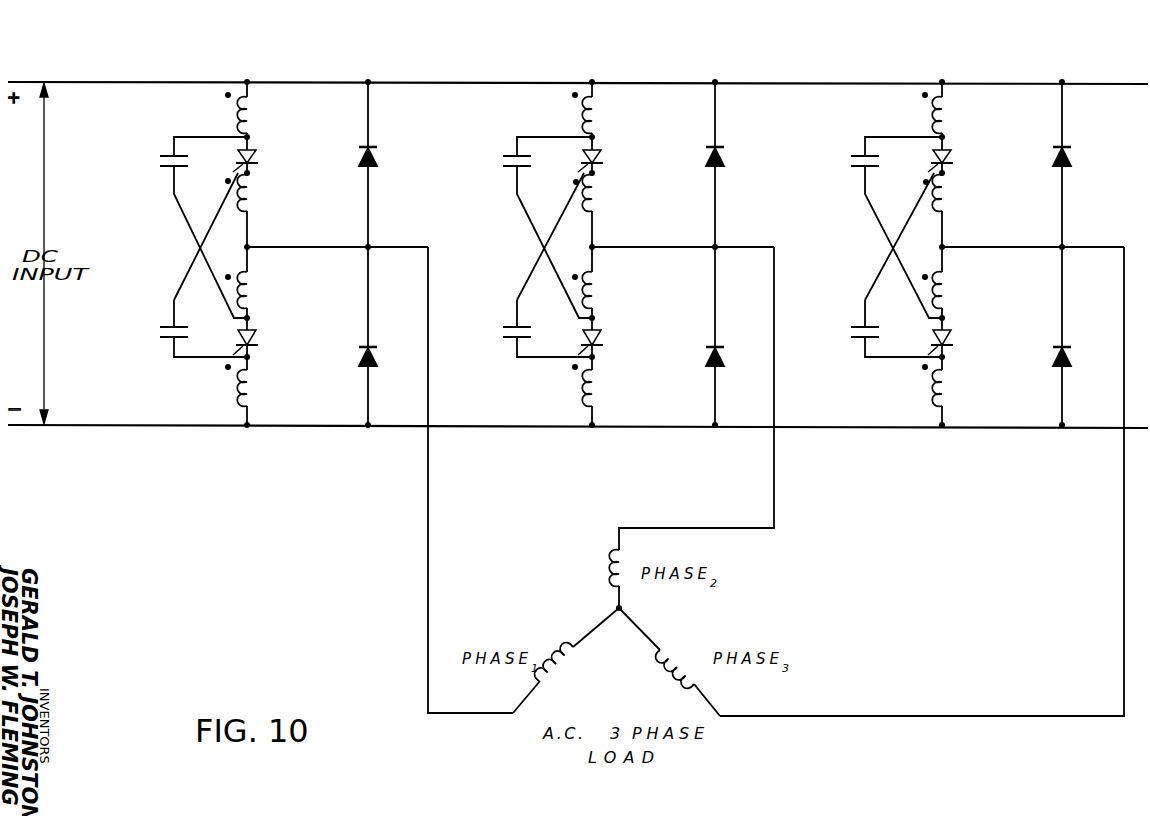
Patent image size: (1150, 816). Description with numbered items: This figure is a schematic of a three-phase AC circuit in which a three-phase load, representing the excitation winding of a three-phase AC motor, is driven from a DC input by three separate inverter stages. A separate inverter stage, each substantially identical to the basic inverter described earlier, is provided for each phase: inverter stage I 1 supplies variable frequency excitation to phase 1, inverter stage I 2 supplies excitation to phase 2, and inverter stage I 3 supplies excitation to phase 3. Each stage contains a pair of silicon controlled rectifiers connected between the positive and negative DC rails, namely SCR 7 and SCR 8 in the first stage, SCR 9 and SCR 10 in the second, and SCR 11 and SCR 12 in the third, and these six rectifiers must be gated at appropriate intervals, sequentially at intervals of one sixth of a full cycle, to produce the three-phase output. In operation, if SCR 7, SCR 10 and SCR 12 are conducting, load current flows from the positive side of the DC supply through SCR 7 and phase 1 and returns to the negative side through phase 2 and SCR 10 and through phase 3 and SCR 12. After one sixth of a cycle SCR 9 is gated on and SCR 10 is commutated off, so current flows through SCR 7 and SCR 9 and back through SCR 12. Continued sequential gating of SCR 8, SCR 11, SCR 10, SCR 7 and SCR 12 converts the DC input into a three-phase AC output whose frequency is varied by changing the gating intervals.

The inverter stage I1 / phase 1 is at (336, 375).
The inverter stage I2 / phase 2 is at (638, 296).
The inverter stage I3 / phase 3 is at (922, 378).
The silicon controlled rectifier SCR7 7 is at (271, 161).
The silicon controlled rectifier SCR8 8 is at (271, 343).
The silicon controlled rectifier SCR9 9 is at (617, 162).
The silicon controlled rectifier SCR10 10 is at (621, 343).
The silicon controlled rectifier SCR11 11 is at (970, 162).
The silicon controlled rectifier SCR12 12 is at (970, 343).